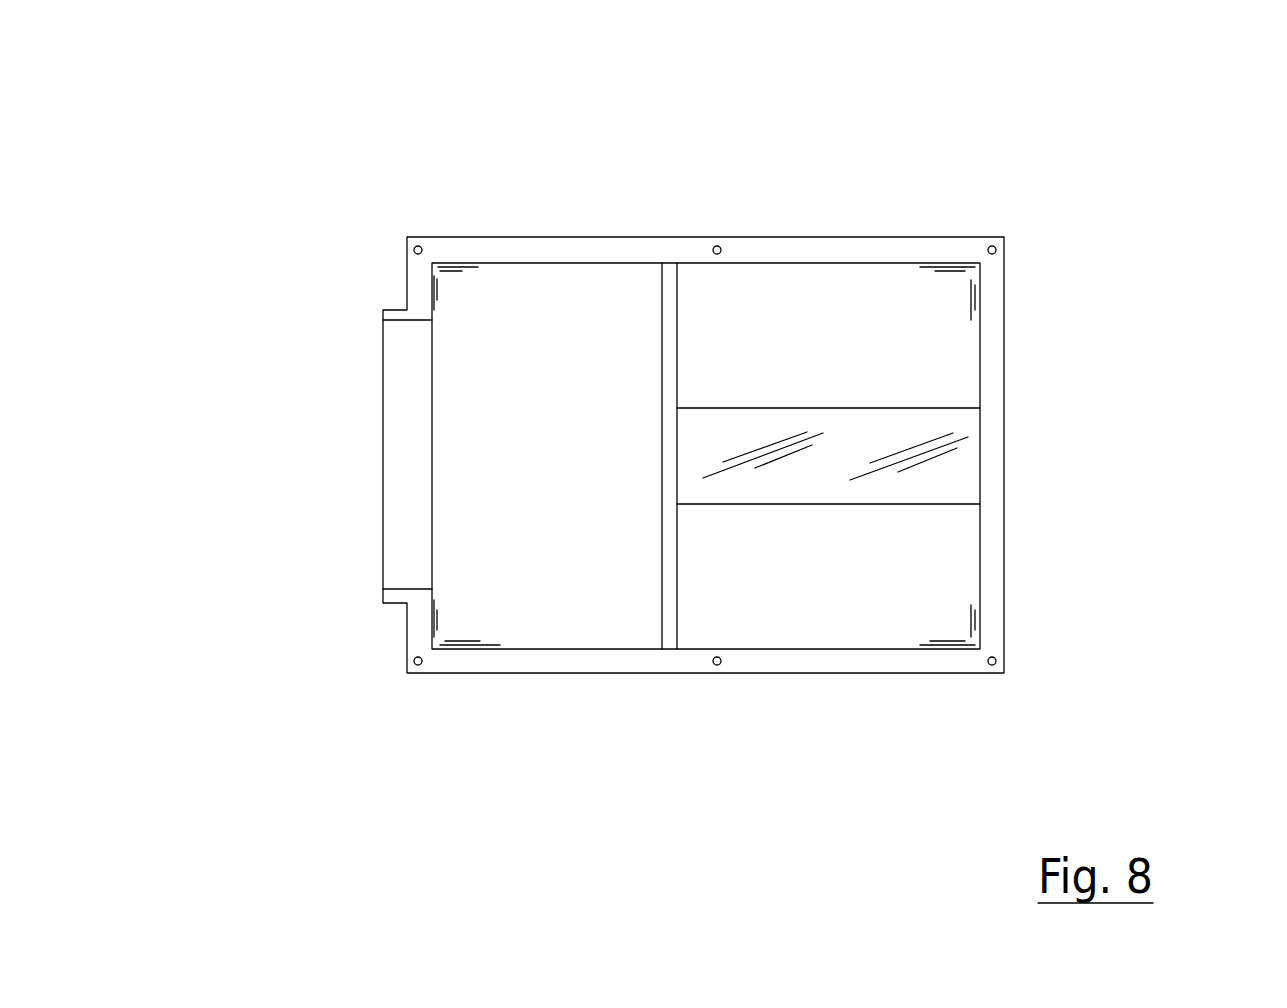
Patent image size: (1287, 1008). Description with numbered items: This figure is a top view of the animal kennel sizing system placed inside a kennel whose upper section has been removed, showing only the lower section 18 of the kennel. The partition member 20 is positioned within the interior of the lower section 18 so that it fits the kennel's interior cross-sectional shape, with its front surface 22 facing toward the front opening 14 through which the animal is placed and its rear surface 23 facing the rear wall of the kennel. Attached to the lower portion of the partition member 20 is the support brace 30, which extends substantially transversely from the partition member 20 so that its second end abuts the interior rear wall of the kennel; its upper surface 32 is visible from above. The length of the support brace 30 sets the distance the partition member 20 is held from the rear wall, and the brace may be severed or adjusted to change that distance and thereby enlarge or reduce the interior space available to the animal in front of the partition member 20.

The front opening 14 is at (383, 457).
The lower section 18 is at (1005, 240).
The partition member 20 is at (662, 590).
The front surface 22 is at (662, 368).
The rear surface 23 is at (678, 338).
The support brace 30 is at (902, 505).
The upper surface 32 is at (860, 428).